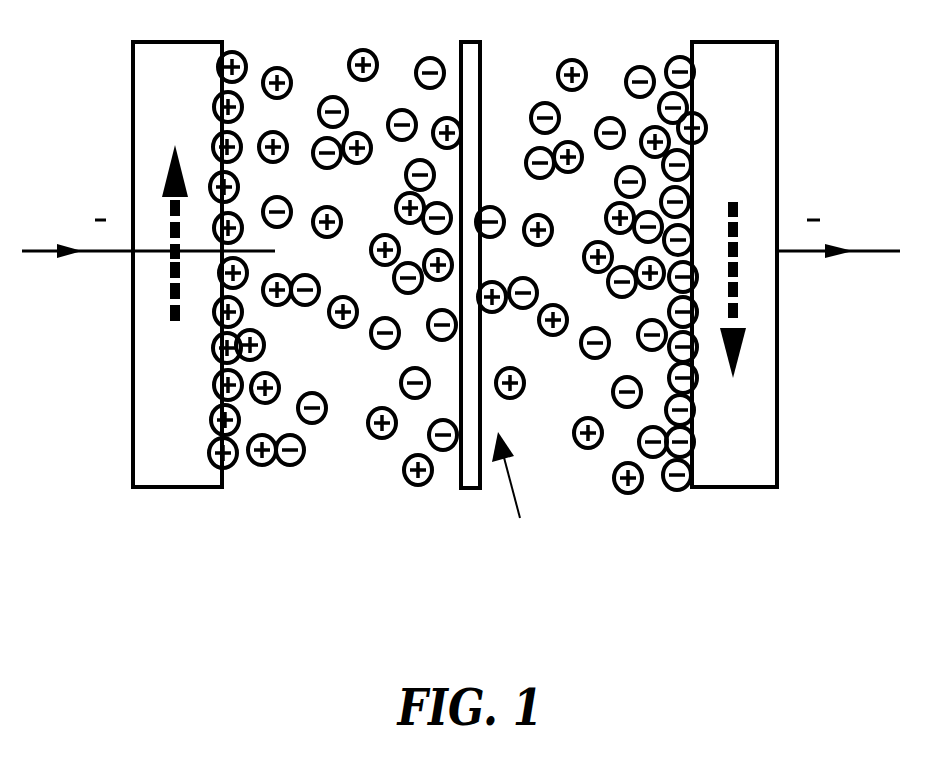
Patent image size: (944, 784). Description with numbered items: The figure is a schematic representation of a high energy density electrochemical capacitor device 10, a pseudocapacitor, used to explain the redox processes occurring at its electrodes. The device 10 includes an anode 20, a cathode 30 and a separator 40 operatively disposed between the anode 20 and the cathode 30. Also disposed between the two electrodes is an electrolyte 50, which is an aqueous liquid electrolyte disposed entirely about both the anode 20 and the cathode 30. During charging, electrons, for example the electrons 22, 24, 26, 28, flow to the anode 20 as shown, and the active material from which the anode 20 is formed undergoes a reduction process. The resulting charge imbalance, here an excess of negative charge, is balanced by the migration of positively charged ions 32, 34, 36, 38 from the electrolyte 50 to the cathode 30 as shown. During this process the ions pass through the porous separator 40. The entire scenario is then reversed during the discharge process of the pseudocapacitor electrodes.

The electrochemical capacitor device 10 is at (461, 308).
The anode 20 is at (770, 438).
The electron 22 is at (678, 62).
The electron 24 is at (625, 405).
The electron 26 is at (655, 448).
The electron 28 is at (685, 488).
The cathode 30 is at (145, 405).
The positively charged ion 32 is at (236, 60).
The positively charged ion 34 is at (222, 393).
The positively charged ion 36 is at (220, 428).
The positively charged ion 38 is at (220, 463).
The separator 40 is at (460, 488).
The electrolyte 50 is at (517, 492).